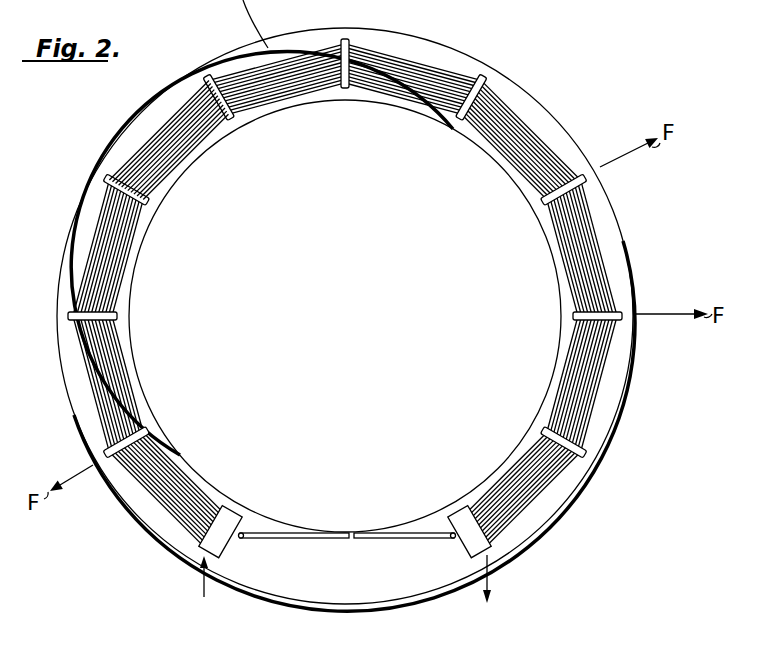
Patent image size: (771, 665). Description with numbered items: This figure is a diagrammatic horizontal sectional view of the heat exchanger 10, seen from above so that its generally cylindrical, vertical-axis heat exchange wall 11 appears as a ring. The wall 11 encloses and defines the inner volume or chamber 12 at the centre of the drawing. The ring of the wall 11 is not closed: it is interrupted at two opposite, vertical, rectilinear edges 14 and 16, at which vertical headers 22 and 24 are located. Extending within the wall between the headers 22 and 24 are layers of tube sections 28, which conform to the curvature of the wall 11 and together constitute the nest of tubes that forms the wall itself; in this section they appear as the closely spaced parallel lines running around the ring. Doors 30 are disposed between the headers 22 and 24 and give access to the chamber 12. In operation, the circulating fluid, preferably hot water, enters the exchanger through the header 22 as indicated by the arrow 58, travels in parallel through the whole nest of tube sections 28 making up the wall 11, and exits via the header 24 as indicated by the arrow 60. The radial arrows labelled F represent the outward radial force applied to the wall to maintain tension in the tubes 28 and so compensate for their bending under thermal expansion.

The heat exchanger 10 is at (592, 102).
The heat exchange wall 11 is at (513, 112).
The inner volume or chamber 12 is at (358, 301).
The vertical rectilinear edge 14 is at (205, 520).
The vertical rectilinear edge 16 is at (483, 515).
The vertical header 22 is at (230, 518).
The vertical header 24 is at (466, 520).
The tube sections 28 is at (143, 150).
The doors 30 is at (354, 533).
The arrow 58 is at (203, 585).
The arrow 60 is at (489, 574).